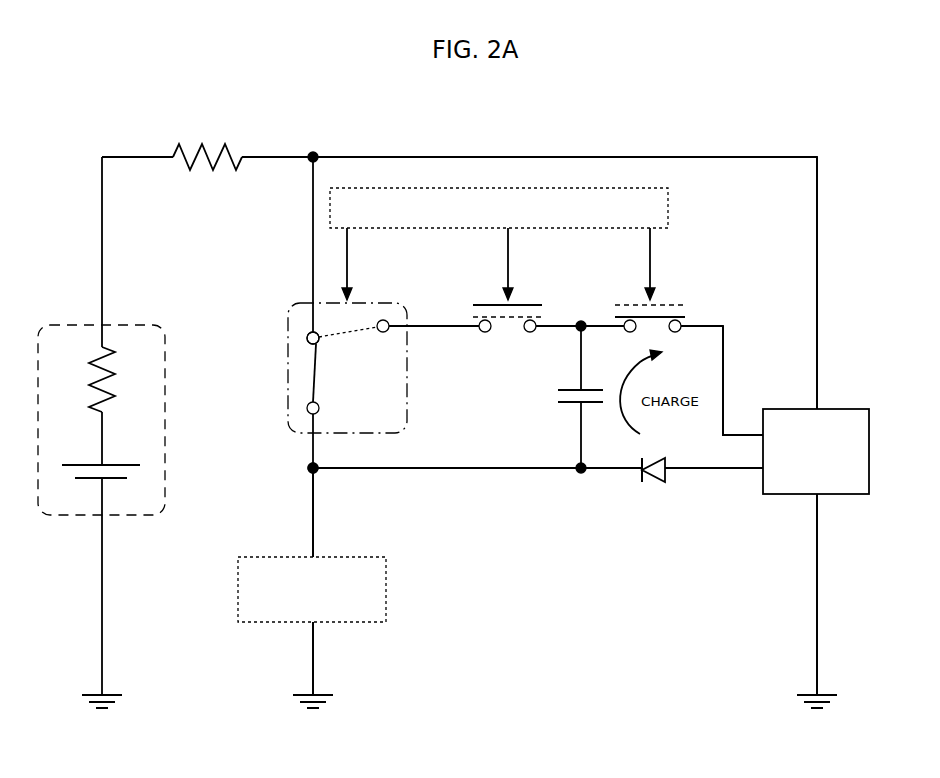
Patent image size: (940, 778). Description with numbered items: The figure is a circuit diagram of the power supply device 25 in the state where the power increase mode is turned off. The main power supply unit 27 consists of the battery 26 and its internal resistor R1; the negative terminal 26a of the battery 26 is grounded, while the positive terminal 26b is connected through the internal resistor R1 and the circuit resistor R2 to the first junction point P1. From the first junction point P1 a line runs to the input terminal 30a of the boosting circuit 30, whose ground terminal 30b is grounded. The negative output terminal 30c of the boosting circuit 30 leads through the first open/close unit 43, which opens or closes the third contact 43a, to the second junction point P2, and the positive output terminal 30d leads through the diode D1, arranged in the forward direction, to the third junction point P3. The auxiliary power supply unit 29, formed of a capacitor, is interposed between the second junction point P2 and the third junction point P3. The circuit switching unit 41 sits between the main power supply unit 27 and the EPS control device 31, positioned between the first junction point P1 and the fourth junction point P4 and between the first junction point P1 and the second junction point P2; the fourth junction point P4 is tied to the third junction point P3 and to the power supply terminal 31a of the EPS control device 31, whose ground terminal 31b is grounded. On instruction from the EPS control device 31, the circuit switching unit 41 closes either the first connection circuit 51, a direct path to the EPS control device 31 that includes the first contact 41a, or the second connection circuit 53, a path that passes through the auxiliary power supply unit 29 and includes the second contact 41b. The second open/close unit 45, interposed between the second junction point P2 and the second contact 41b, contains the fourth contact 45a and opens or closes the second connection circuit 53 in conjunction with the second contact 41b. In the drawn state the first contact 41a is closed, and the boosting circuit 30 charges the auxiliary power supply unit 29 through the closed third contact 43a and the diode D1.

The circuit resistor R2 is at (202, 148).
The first junction point P1 is at (318, 152).
The power supply device 25 is at (716, 124).
The main power supply unit 27 is at (128, 327).
The internal resistor R1 is at (110, 356).
The battery 26 is at (128, 460).
The negative terminal 26a is at (108, 482).
The positive terminal 26b is at (104, 455).
The circuit switching unit 41 is at (372, 300).
The first contact 41a is at (313, 377).
The second contact 41b is at (355, 340).
The EPS control device 31 is at (670, 204).
The power supply terminal 31a is at (317, 556).
The ground terminal 31b is at (317, 623).
The second connection circuit 53 is at (443, 312).
The second open/close unit 45 is at (528, 292).
The fourth contact 45a is at (530, 302).
The second junction point P2 is at (586, 320).
The first open/close unit 43 is at (671, 290).
The third contact 43a is at (670, 314).
The auxiliary power supply unit 29 is at (566, 388).
The fourth junction point P4 is at (308, 471).
The first connection circuit 51 is at (292, 448).
The third junction point P3 is at (583, 474).
The diode D1 is at (650, 476).
The boosting circuit 30 is at (845, 409).
The input terminal 30a is at (820, 408).
The ground terminal 30b is at (820, 496).
The negative output terminal 30c is at (762, 433).
The positive output terminal 30d is at (761, 472).